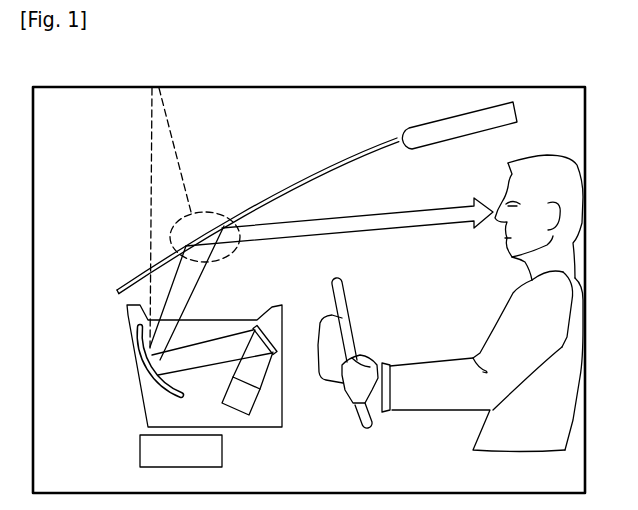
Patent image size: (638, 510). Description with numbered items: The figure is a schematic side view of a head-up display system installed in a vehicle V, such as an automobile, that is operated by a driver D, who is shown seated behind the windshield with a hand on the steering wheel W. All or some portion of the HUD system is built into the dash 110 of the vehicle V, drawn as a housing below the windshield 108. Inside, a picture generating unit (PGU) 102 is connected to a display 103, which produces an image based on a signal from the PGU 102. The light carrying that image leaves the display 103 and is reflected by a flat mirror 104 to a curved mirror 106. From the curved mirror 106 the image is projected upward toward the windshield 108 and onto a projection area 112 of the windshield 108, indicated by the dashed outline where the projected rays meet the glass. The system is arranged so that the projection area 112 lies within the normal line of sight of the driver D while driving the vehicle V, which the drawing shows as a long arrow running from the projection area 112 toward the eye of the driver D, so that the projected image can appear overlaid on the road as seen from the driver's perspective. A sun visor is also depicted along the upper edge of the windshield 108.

The picture generating unit (PGU) 102 is at (140, 450).
The display 103 is at (243, 420).
The flat mirror 104 is at (278, 356).
The curved mirror 106 is at (138, 345).
The windshield 108 is at (291, 186).
The dash 110 is at (127, 308).
The projection area 112 is at (200, 212).
The vehicle V is at (425, 125).
The steering wheel W is at (343, 307).
The driver D is at (568, 296).